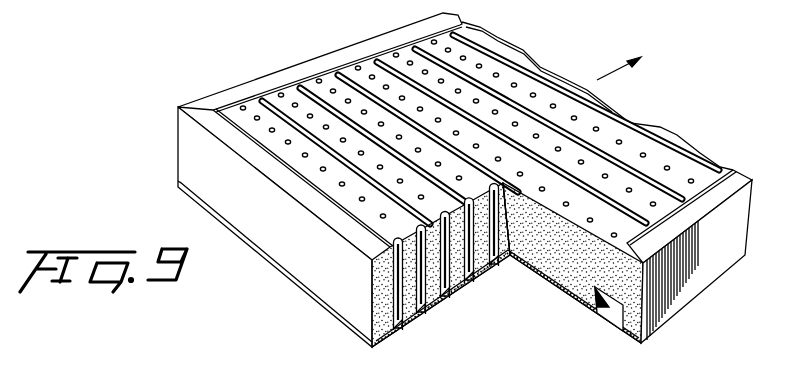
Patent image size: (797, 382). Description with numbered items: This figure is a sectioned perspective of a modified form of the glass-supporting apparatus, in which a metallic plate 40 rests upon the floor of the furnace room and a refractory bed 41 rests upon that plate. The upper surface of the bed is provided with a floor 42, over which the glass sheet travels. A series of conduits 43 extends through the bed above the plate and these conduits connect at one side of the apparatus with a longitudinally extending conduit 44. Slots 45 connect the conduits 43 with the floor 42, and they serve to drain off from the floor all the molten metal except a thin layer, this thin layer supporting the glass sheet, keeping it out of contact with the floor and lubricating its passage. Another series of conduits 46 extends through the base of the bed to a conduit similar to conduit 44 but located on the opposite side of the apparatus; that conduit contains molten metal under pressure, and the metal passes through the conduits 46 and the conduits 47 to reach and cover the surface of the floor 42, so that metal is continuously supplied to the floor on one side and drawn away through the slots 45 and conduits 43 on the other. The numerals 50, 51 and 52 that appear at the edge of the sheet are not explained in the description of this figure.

The metallic plate 40 is at (622, 334).
The refractory bed 41 is at (608, 316).
The floor 42 is at (500, 72).
The conduits 43 is at (458, 286).
The longitudinally extending conduit 44 is at (611, 301).
The slots 45 is at (403, 156).
The conduits 46 is at (419, 311).
The conduits 47 is at (298, 106).
The element 50 is at (589, 381).
The element 51 is at (703, 378).
The element 52 is at (759, 373).